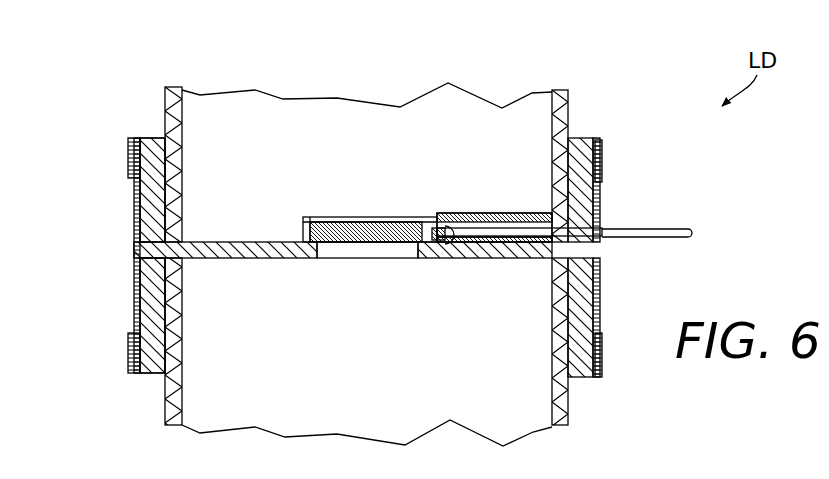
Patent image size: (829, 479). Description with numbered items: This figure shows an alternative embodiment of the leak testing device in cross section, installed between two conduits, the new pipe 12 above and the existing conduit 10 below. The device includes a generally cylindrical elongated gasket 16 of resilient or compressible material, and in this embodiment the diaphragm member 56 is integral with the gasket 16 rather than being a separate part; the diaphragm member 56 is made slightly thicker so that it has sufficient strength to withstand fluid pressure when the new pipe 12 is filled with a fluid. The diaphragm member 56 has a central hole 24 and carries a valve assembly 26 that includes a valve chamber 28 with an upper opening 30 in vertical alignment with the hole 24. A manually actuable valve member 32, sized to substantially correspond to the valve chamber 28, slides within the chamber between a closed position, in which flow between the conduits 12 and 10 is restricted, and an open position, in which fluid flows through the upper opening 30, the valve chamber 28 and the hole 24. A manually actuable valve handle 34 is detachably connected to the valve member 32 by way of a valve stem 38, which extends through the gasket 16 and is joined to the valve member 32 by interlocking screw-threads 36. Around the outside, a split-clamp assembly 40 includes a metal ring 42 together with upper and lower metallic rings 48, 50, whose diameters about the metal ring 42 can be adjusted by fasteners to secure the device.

The conduit 10 is at (572, 408).
The conduit 12 is at (570, 106).
The gasket 16 is at (153, 138).
The hole 24 is at (358, 258).
The valve assembly 26 is at (465, 187).
The valve chamber 28 is at (500, 213).
The upper opening 30 is at (333, 217).
The valve member 32 is at (395, 222).
The valve handle 34 is at (683, 228).
The interlocking screw-threads 36 is at (445, 242).
The valve stem 38 is at (490, 242).
The split-clamp assembly 40 is at (132, 248).
The metal ring 42 is at (134, 290).
The upper metallic ring 48 is at (128, 158).
The lower metallic ring 50 is at (132, 345).
The diaphragm member 56 is at (236, 242).